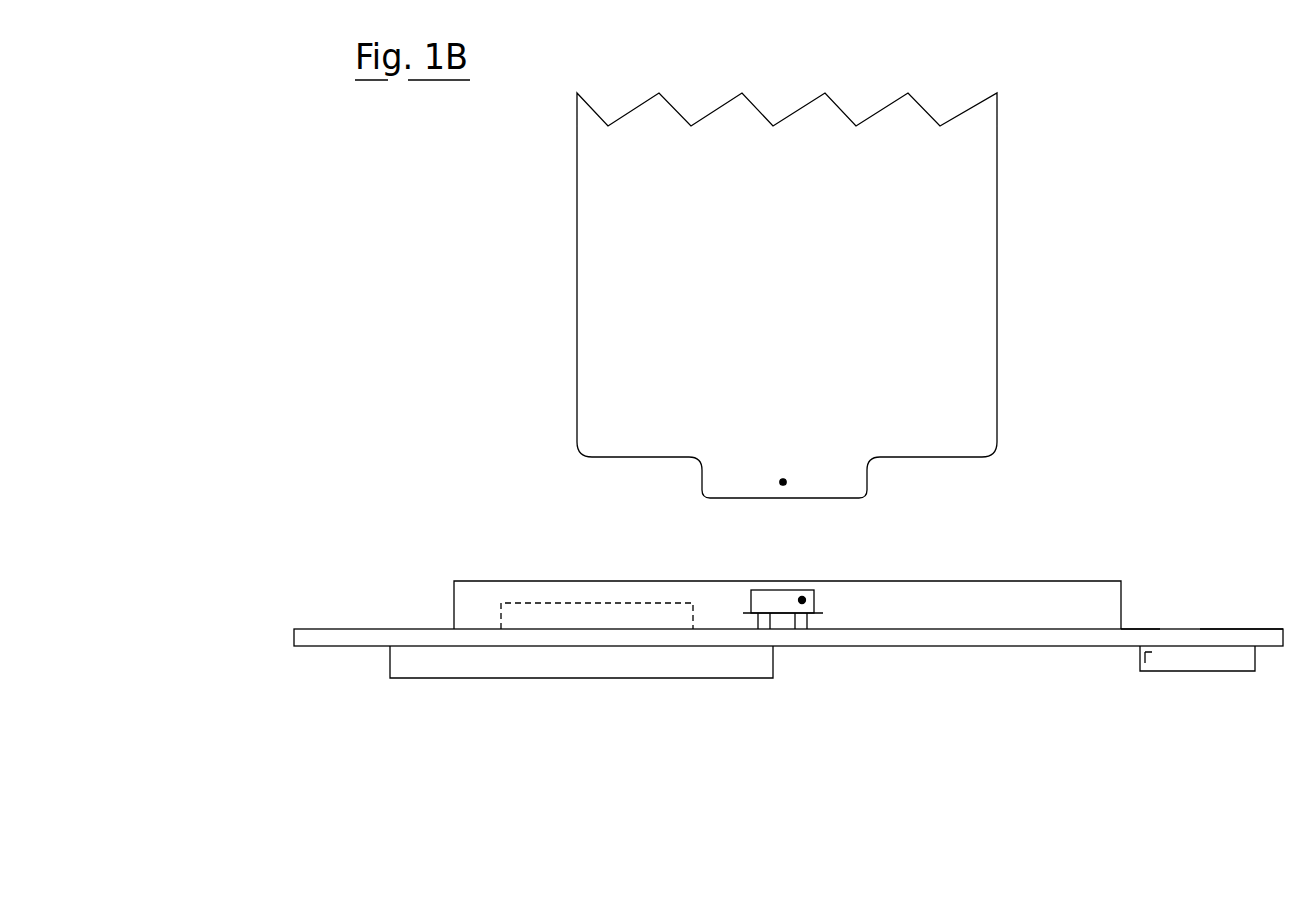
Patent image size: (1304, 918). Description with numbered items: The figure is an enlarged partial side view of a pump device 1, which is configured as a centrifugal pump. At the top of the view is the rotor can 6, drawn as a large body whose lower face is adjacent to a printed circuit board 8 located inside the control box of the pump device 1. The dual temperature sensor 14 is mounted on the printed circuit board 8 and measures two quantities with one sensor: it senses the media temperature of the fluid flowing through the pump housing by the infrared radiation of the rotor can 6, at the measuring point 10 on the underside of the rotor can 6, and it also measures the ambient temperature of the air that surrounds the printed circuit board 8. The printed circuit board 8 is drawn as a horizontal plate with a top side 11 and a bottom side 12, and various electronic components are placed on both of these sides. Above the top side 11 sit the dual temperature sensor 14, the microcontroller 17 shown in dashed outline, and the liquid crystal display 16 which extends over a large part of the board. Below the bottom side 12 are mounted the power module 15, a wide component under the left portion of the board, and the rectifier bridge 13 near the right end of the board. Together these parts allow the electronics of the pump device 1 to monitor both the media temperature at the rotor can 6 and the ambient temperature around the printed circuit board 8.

The pump device 1 is at (1104, 159).
The rotor can 6 is at (640, 457).
The printed circuit board 8 is at (1218, 629).
The measuring point 10 is at (783, 482).
The top side 11 is at (1130, 629).
The bottom side 12 is at (930, 646).
The rectifier bridge 13 is at (1141, 671).
The dual temperature sensor 14 is at (802, 600).
The power module 15 is at (597, 678).
The liquid crystal display 16 is at (1037, 581).
The microcontroller 17 is at (638, 603).